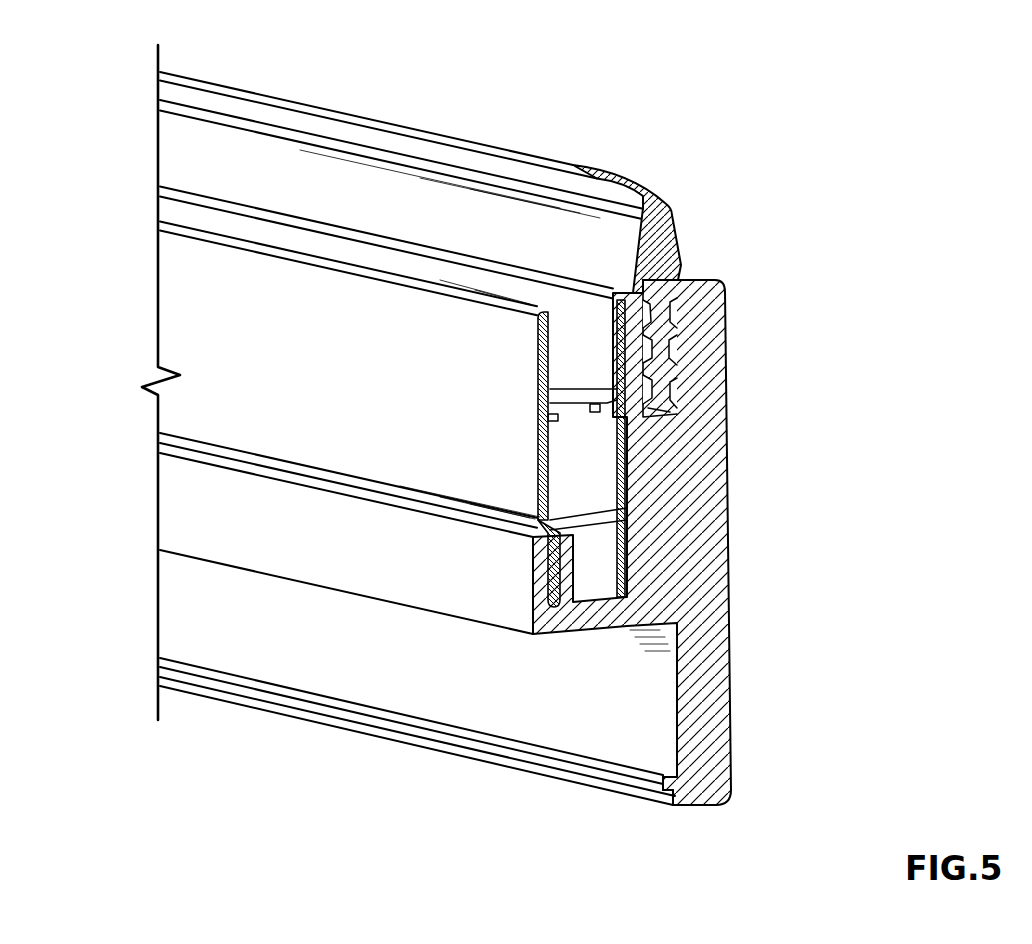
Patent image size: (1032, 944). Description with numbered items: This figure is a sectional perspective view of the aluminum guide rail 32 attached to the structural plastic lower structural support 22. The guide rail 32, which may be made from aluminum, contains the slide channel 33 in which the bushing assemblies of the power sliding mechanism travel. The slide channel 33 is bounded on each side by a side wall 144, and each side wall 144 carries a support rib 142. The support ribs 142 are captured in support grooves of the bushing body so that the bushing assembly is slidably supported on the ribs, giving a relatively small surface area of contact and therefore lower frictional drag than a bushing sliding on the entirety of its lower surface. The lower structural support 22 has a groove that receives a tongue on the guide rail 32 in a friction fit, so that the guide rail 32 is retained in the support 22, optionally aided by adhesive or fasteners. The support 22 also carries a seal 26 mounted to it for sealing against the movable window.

The lower structural support 22 is at (710, 366).
The seal 26 is at (668, 257).
The guide rail 32 is at (458, 425).
The slide channel 33 is at (351, 258).
The support rib 142 is at (592, 408).
The side wall 144 is at (550, 320).